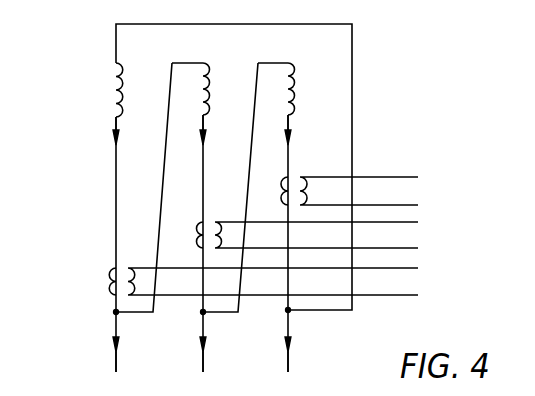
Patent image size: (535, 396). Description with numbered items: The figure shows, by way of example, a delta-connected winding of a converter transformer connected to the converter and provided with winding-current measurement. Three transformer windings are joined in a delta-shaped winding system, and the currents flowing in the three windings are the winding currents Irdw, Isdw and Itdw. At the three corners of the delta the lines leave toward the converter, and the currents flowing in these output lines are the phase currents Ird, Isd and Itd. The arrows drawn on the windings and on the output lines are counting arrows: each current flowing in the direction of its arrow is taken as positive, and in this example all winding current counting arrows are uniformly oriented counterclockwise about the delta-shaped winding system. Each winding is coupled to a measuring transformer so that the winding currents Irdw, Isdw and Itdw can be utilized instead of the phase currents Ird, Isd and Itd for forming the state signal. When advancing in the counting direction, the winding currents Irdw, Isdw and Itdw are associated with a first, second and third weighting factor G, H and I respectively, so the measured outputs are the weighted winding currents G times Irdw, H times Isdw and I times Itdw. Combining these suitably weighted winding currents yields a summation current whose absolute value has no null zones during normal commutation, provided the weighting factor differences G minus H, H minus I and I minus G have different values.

The winding current Irdw is at (115, 126).
The winding current Isdw is at (205, 153).
The winding current Itdw is at (312, 153).
The third weighting factor I is at (410, 192).
The second weighting factor H is at (410, 234).
The first weighting factor G is at (410, 277).
The phase current Ird is at (118, 357).
The phase current Isd is at (205, 357).
The phase current Itd is at (290, 357).